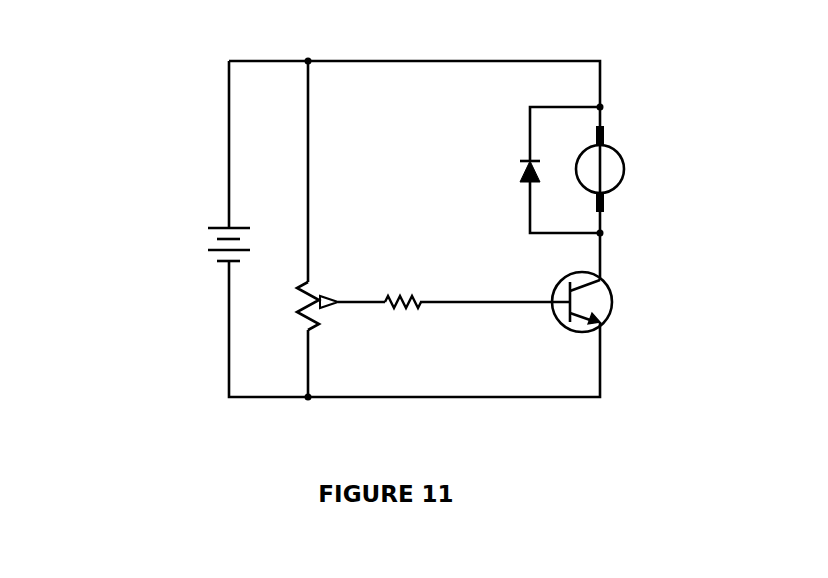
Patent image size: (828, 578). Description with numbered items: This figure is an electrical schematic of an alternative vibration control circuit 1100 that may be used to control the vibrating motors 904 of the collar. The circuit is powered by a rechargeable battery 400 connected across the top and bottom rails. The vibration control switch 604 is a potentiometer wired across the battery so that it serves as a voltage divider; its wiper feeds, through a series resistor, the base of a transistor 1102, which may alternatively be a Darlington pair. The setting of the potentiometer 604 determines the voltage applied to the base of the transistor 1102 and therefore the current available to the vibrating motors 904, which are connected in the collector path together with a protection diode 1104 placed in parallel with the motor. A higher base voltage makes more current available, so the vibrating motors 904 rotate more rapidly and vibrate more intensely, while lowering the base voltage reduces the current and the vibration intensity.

The vibration control circuit 1100 is at (160, 108).
The rechargeable battery 400 is at (198, 240).
The vibration control switch 604 is at (330, 275).
The protection diode 1104 is at (520, 192).
The vibrating motors 904 is at (632, 167).
The transistor 1102 is at (620, 299).